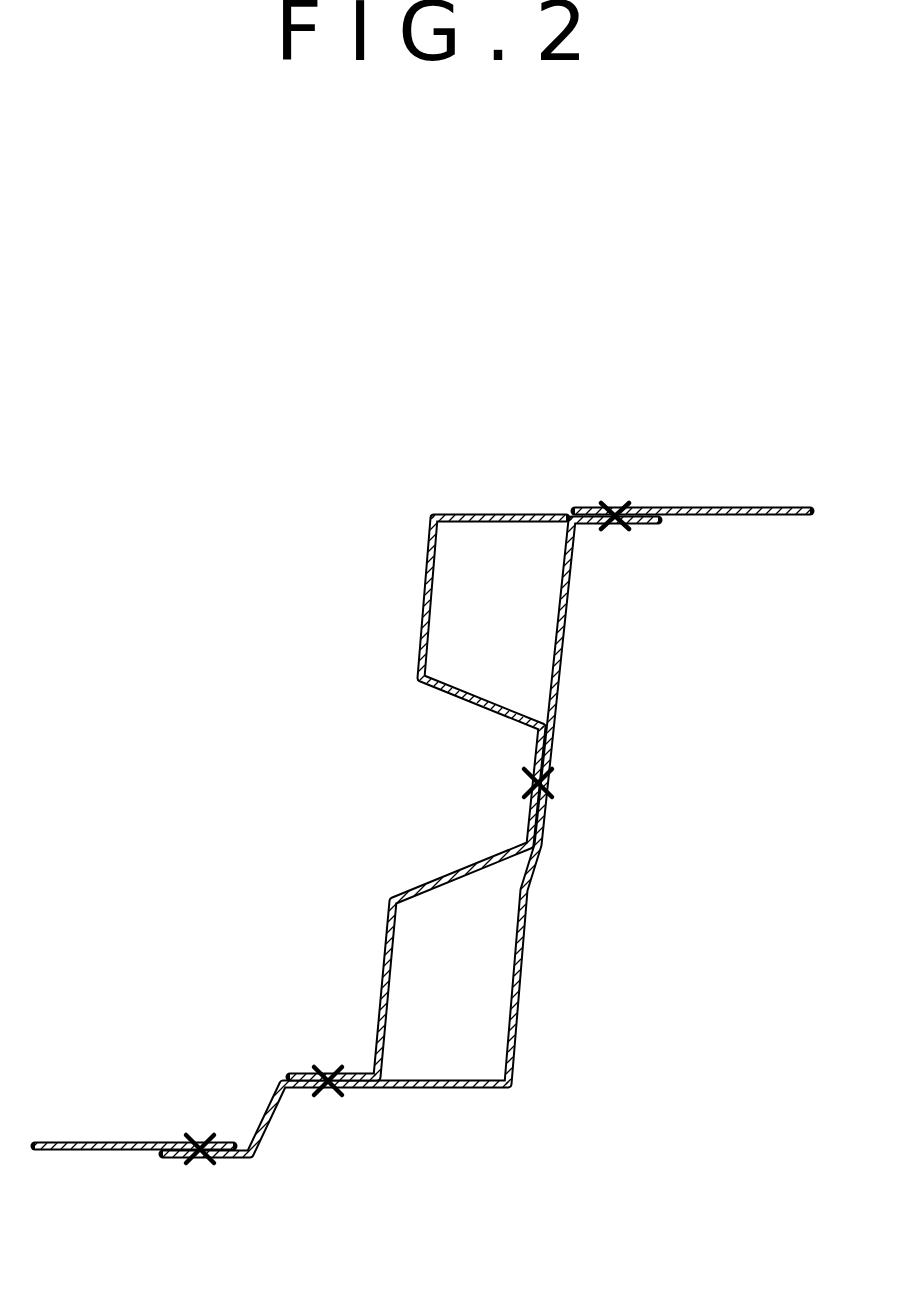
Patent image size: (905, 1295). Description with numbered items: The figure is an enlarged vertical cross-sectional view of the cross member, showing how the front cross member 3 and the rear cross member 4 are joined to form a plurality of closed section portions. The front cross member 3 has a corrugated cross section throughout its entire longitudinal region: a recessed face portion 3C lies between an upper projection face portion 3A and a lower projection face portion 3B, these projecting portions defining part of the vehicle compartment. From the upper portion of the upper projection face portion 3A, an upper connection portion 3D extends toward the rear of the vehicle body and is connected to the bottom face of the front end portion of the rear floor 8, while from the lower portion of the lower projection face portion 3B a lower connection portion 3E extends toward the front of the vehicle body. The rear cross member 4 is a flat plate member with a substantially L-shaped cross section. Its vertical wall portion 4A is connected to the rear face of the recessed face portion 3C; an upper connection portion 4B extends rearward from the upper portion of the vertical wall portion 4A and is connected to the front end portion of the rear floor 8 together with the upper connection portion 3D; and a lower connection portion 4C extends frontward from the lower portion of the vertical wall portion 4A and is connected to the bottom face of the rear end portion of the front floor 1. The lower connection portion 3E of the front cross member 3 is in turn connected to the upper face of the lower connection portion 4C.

The front floor 1 is at (90, 1141).
The front cross member 3 is at (425, 513).
The upper projection face portion 3A is at (420, 597).
The lower projection face portion 3B is at (383, 945).
The recessed face portion 3C is at (527, 818).
The upper connection portion 3D is at (488, 513).
The lower connection portion 3E is at (302, 1072).
The rear cross member 4 is at (507, 1087).
The vertical wall portion 4A is at (525, 955).
The upper connection portion 4B is at (637, 527).
The lower connection portion 4C is at (417, 1090).
The rear floor 8 is at (710, 506).